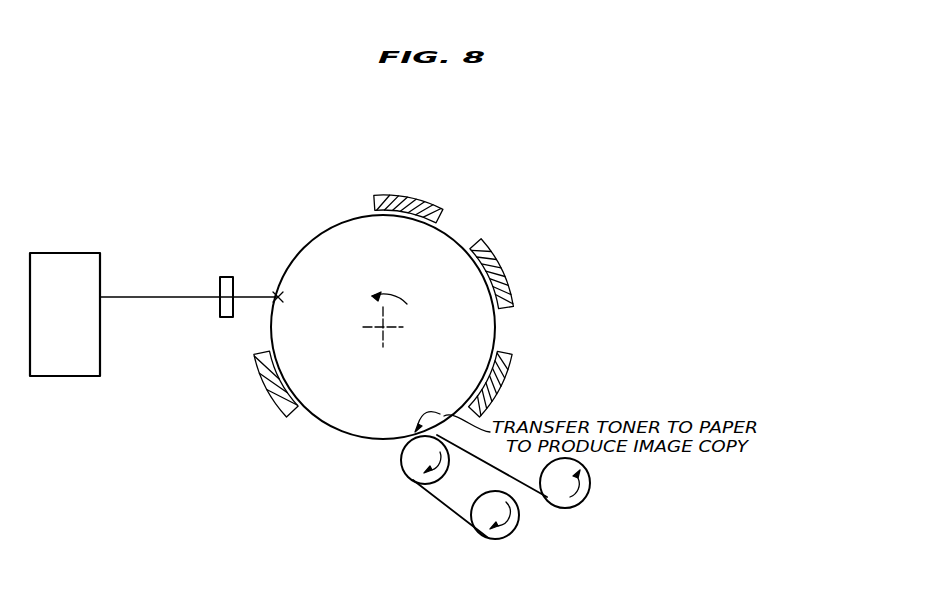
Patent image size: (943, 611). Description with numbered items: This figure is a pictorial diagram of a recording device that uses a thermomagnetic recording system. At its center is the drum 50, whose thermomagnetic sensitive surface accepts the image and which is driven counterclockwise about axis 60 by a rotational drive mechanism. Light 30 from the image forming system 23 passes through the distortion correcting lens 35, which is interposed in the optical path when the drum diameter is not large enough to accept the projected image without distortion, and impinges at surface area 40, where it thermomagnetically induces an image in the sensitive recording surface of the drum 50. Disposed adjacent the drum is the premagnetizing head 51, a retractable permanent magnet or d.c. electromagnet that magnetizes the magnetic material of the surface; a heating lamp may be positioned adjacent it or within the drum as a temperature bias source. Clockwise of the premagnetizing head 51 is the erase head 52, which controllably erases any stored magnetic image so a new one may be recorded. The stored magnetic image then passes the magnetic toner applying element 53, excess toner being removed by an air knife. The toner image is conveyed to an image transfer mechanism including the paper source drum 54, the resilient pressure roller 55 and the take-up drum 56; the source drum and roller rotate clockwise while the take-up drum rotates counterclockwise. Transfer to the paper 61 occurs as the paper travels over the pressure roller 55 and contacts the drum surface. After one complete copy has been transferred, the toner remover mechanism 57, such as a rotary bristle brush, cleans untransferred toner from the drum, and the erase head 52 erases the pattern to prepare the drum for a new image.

The image forming system 23 is at (70, 319).
The light image 30 is at (158, 297).
The distortion correcting lens 35 is at (221, 277).
The surface area 40 is at (278, 296).
The drum 50 is at (352, 214).
The premagnetizing head 51 is at (444, 216).
The erase head 52 is at (506, 280).
The magnetic toner applying element 53 is at (266, 392).
The paper source drum 54 is at (513, 540).
The resilient pressure roller 55 is at (402, 469).
The take-up drum 56 is at (588, 497).
The toner remover mechanism 57 is at (506, 379).
The axis 60 is at (384, 330).
The paper 61 is at (484, 468).